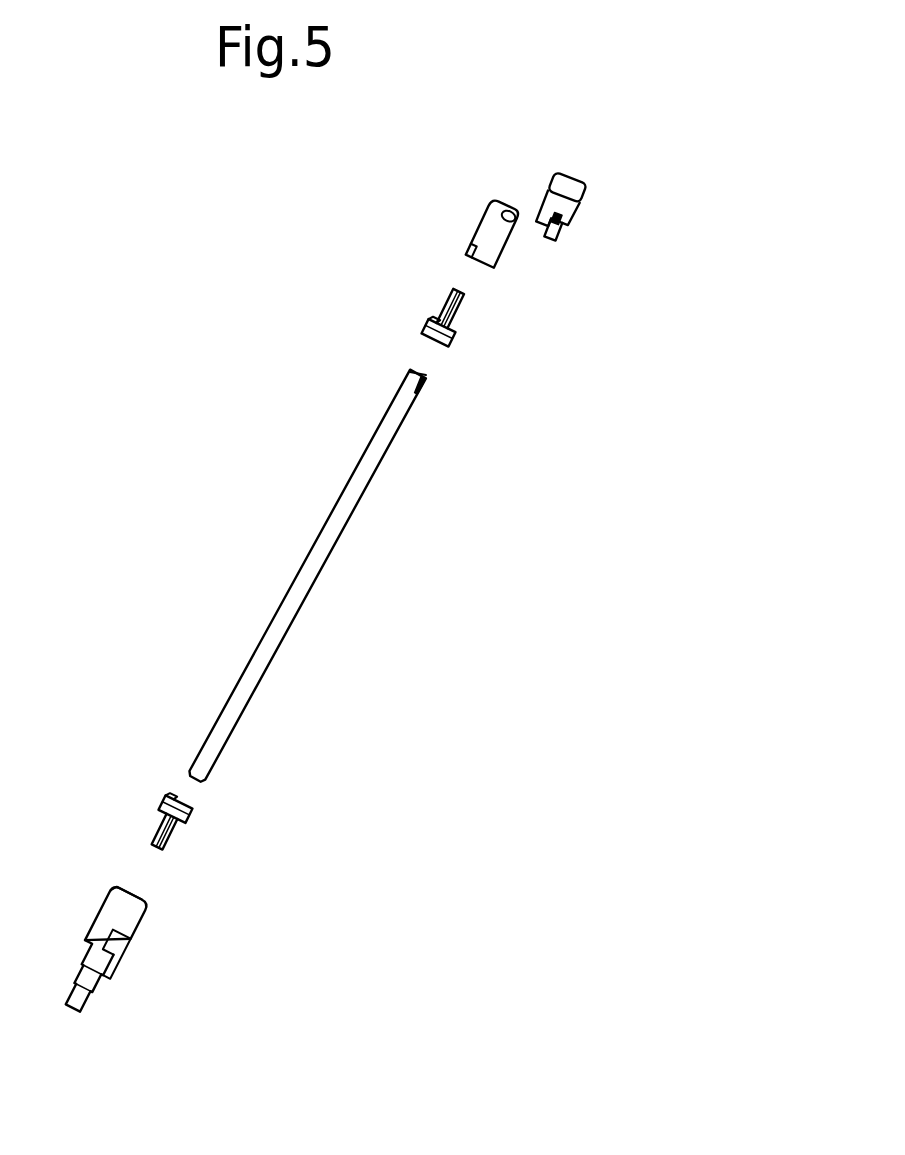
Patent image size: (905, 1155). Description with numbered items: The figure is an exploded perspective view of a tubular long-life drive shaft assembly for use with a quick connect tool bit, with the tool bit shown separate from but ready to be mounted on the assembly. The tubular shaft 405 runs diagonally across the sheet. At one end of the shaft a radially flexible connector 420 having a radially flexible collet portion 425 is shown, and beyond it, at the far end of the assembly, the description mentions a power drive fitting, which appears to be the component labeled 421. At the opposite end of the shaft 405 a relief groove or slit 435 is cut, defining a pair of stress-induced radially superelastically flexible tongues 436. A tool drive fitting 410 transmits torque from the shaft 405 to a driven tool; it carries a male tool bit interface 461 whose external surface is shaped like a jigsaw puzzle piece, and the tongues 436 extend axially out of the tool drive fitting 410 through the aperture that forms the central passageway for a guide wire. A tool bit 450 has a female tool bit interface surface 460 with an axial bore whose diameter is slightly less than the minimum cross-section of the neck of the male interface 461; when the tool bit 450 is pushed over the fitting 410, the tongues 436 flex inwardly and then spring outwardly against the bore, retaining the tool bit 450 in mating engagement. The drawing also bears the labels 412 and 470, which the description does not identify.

The shaft 405 is at (262, 668).
The tool drive fitting 410 is at (500, 246).
The tab 412 is at (473, 252).
The radially flexible connector 420 is at (455, 335).
The end connector 421 is at (136, 923).
The radially flexible collet portion 425 is at (465, 306).
The relief groove or slit 435 is at (424, 373).
The radially superelastically flexible tongues 436 is at (410, 371).
The tool bit 450 is at (560, 182).
The female tool bit interface surface 460 is at (560, 238).
The male tool bit interface 461 is at (518, 205).
The square key 470 is at (564, 216).